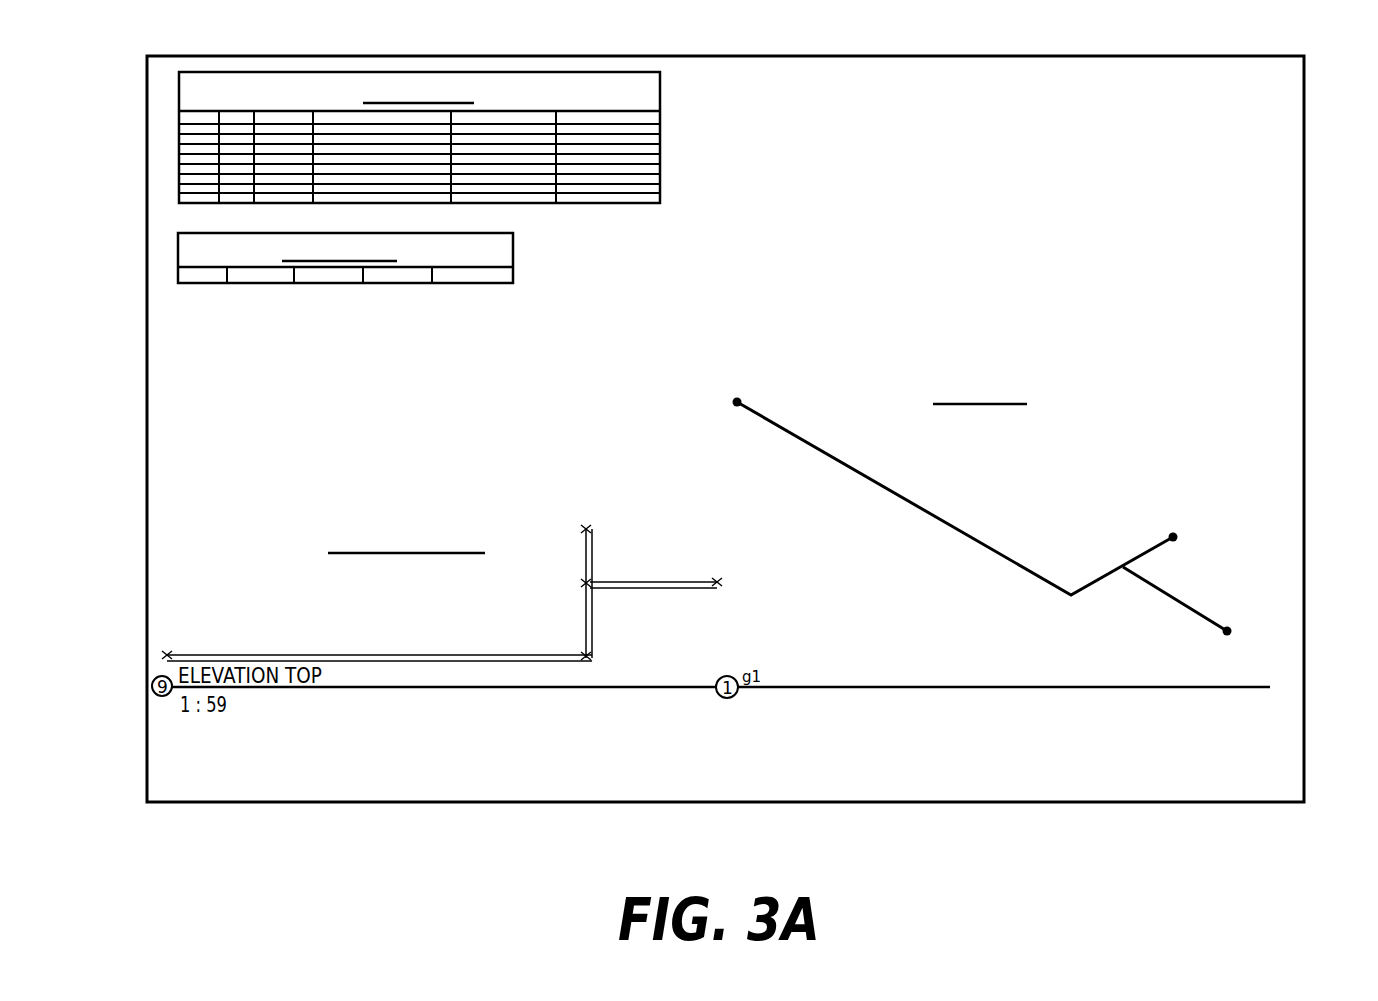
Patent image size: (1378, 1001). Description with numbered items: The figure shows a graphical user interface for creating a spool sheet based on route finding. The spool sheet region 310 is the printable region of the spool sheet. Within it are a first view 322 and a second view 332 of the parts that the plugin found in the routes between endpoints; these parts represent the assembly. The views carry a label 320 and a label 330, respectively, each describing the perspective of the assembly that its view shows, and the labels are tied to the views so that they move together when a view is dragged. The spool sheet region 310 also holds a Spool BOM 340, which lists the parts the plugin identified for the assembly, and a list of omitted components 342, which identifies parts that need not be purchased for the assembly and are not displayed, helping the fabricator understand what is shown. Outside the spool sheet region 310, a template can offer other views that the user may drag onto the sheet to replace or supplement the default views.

The spool sheet region 310 is at (1288, 232).
The label 320 is at (1030, 388).
The first view 322 is at (995, 549).
The label 330 is at (442, 522).
The second view 332 is at (688, 582).
The Spool BOM 340 is at (660, 120).
The list of omitted components 342 is at (513, 263).